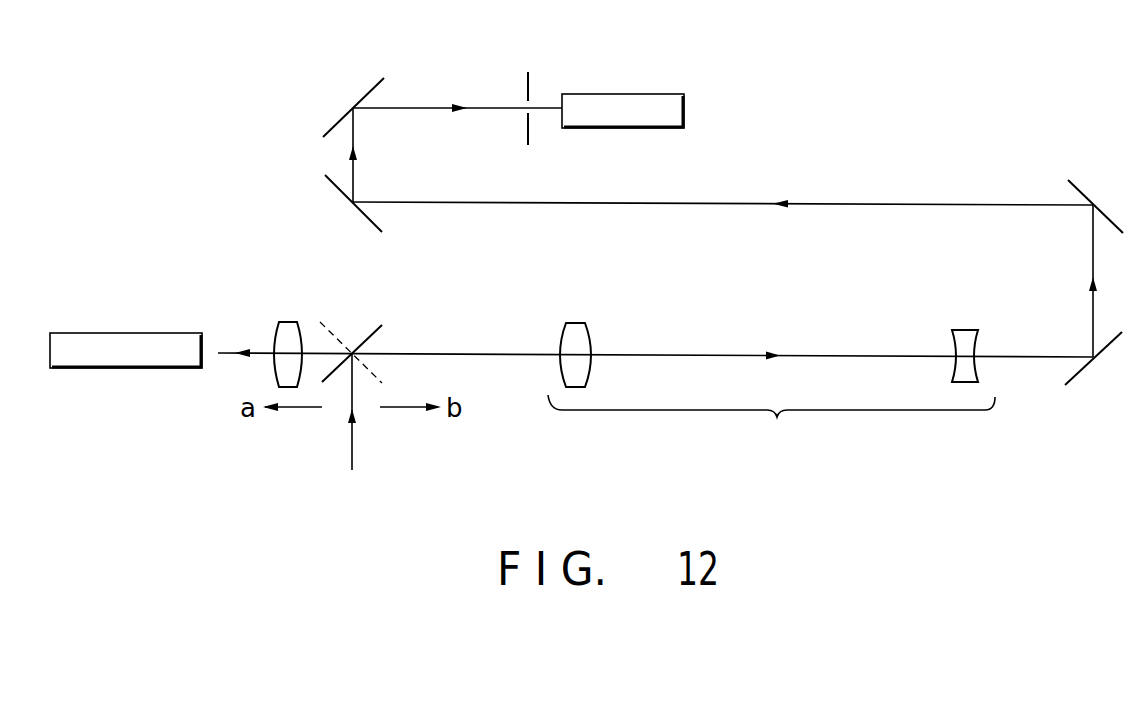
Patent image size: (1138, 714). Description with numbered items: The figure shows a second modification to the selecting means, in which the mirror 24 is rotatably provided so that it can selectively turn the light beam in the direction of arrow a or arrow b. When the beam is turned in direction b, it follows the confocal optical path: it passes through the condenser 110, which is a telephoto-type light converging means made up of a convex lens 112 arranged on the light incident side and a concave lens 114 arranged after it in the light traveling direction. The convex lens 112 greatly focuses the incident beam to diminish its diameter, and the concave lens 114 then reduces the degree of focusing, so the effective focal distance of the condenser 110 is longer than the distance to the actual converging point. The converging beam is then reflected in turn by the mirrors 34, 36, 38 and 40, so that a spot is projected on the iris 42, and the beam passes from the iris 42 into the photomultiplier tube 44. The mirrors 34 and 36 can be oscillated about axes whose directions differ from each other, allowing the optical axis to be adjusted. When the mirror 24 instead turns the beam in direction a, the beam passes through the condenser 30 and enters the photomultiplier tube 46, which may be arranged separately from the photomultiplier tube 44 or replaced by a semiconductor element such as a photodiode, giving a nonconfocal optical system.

The mirror 24 is at (363, 338).
The condenser 30 is at (285, 322).
The mirror 34 is at (1088, 362).
The mirror 36 is at (1085, 198).
The mirror 38 is at (341, 193).
The mirror 40 is at (348, 105).
The iris 42 is at (493, 99).
The photomultiplier tube 44 is at (608, 94).
The photomultiplier tube 46 is at (102, 333).
The condenser 110 is at (771, 425).
The convex lens 112 is at (570, 323).
The concave lens 114 is at (965, 330).